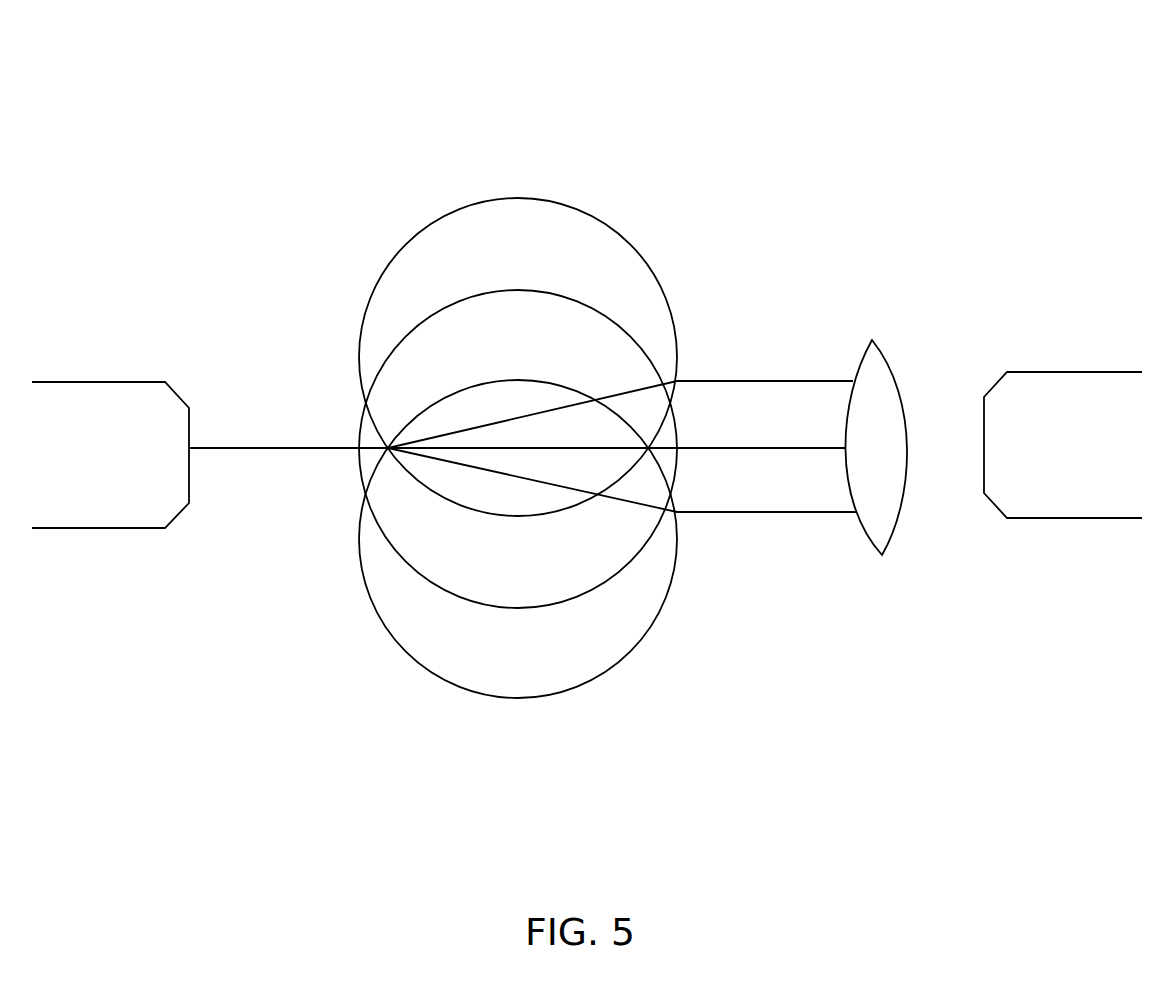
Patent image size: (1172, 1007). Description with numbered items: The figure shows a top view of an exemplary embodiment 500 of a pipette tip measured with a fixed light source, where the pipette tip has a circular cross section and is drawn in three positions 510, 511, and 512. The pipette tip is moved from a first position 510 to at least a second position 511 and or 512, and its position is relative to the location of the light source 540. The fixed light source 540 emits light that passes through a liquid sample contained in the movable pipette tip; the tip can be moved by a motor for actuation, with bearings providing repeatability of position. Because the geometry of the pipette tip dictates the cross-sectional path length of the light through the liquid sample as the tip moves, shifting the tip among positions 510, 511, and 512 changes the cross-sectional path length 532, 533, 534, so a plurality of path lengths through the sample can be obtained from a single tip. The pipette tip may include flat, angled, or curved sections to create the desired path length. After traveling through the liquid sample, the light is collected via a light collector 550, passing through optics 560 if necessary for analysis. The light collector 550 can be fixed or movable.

The exemplary embodiment 500 is at (350, 178).
The first position 510 is at (360, 423).
The second position 511 is at (524, 198).
The second position 512 is at (519, 698).
The cross-sectional path length 532 is at (368, 478).
The cross-sectional path length 533 is at (627, 392).
The cross-sectional path length 534 is at (640, 527).
The light source 540 is at (97, 510).
The light collector 550 is at (1086, 482).
The optics 560 is at (882, 395).